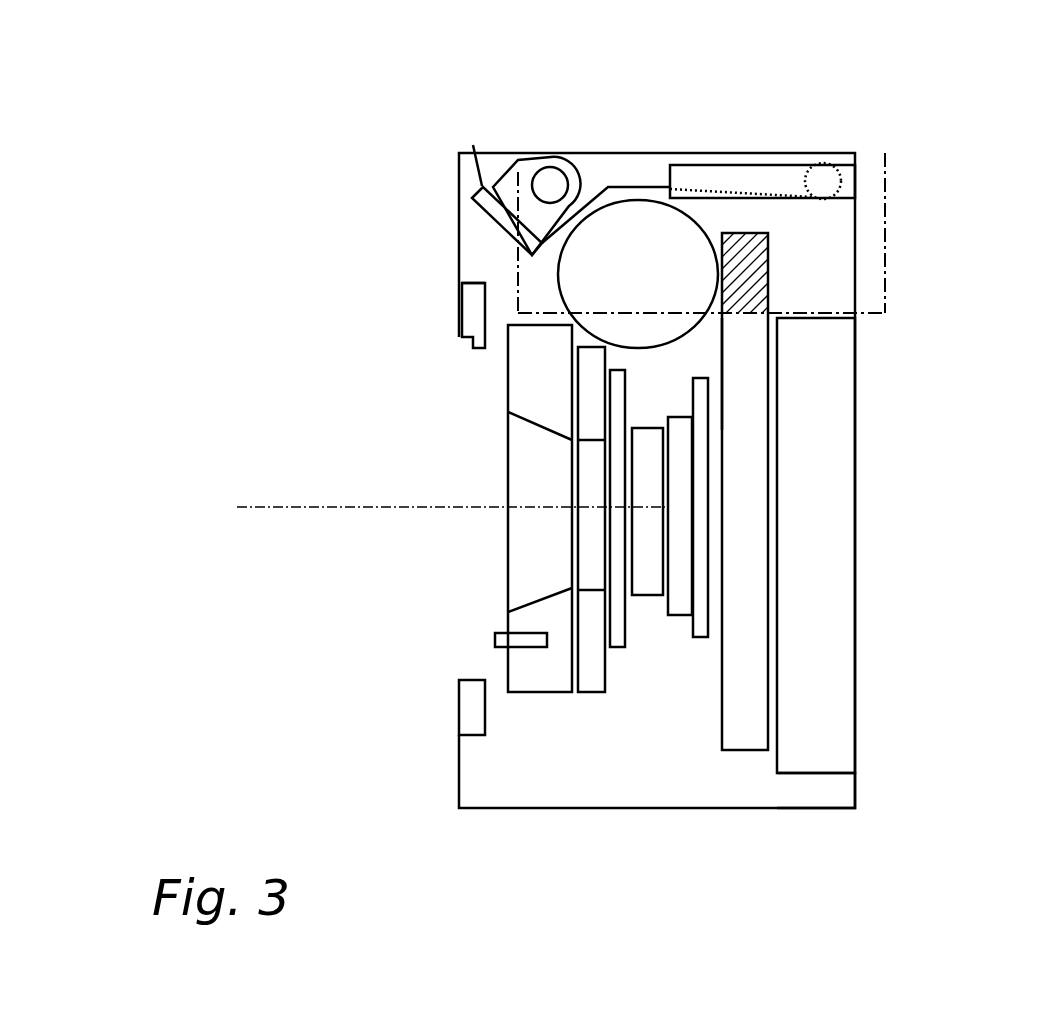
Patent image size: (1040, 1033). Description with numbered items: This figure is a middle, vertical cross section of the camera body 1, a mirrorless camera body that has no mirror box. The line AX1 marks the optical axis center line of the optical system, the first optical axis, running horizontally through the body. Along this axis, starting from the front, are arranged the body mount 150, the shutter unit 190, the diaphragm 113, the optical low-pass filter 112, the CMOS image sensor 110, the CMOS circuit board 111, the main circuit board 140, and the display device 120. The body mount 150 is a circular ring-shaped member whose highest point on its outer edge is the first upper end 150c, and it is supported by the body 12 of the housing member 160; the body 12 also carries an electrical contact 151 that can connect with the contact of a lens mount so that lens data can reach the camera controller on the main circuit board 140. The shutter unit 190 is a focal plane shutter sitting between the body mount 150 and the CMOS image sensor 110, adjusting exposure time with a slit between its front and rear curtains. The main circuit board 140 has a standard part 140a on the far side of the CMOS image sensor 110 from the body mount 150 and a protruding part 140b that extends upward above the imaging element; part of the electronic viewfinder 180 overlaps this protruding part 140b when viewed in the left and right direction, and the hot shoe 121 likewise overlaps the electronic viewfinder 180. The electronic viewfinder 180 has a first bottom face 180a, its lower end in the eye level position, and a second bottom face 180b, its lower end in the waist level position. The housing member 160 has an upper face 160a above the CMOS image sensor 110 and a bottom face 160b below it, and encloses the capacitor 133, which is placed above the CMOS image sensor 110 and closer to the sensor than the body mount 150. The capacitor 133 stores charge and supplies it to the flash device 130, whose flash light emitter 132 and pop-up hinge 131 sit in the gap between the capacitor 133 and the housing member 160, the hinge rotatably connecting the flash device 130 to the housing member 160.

The camera body 1 is at (297, 283).
The body 12 is at (533, 660).
The CMOS image sensor 110 is at (680, 520).
The CMOS circuit board 111 is at (708, 480).
The optical low-pass filter 112 is at (652, 550).
The diaphragm 113 is at (613, 593).
The display device 120 is at (823, 412).
The hot shoe 121 is at (773, 182).
The flash device 130 is at (567, 135).
The pop-up hinge 131 is at (823, 181).
The flash light emitter 132 is at (500, 163).
The capacitor 133 is at (652, 230).
The main circuit board 140 is at (753, 458).
The standard part 140a is at (747, 420).
The protruding part 140b is at (750, 275).
The body mount 150 is at (461, 300).
The first upper end 150c is at (473, 283).
The electrical contact 151 is at (527, 647).
The housing member 160 is at (502, 808).
The upper face 160a is at (792, 153).
The bottom face 160b is at (805, 808).
The electronic viewfinder 180 is at (870, 190).
The first bottom face 180a is at (622, 313).
The second bottom face 180b is at (517, 287).
The shutter unit 190 is at (593, 635).
The first optical axis AX1 is at (257, 507).